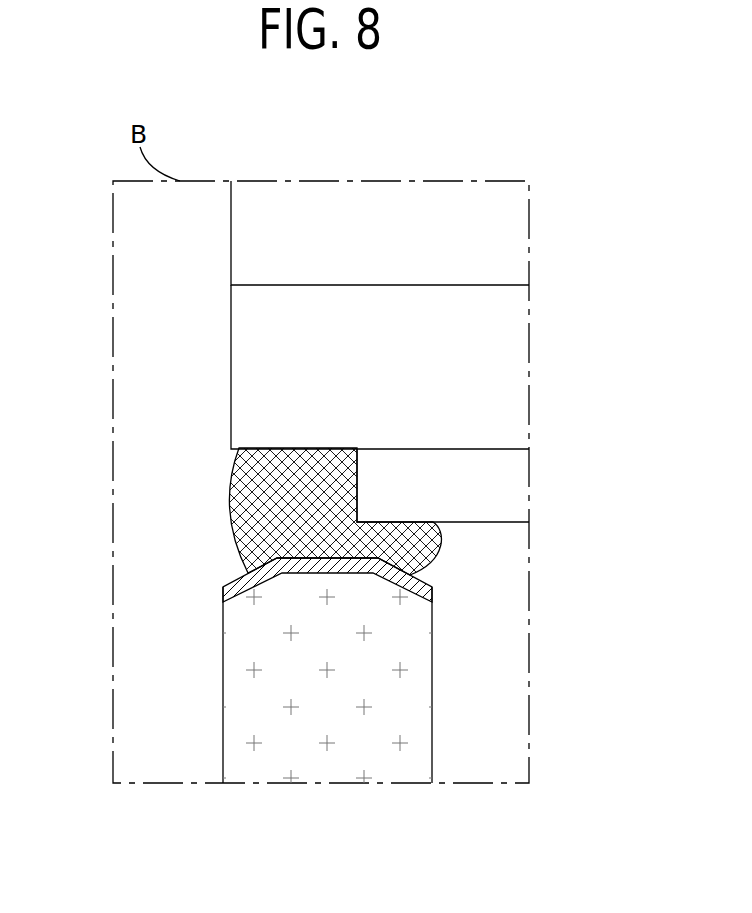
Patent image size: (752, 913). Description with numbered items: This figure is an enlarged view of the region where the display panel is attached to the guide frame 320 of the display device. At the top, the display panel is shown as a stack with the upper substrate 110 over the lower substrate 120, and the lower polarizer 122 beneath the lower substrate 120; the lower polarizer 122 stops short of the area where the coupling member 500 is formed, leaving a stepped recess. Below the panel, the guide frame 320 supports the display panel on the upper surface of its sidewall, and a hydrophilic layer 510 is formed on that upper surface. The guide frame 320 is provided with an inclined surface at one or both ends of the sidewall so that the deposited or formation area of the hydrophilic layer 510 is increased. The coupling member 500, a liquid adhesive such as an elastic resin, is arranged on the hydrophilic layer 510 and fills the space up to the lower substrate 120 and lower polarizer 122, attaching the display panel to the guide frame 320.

The upper substrate 110 is at (490, 237).
The lower substrate 120 is at (490, 387).
The lower polarizer 122 is at (490, 492).
The coupling member 500 is at (267, 498).
The hydrophilic layer 510 is at (266, 571).
The guide frame 320 is at (267, 700).